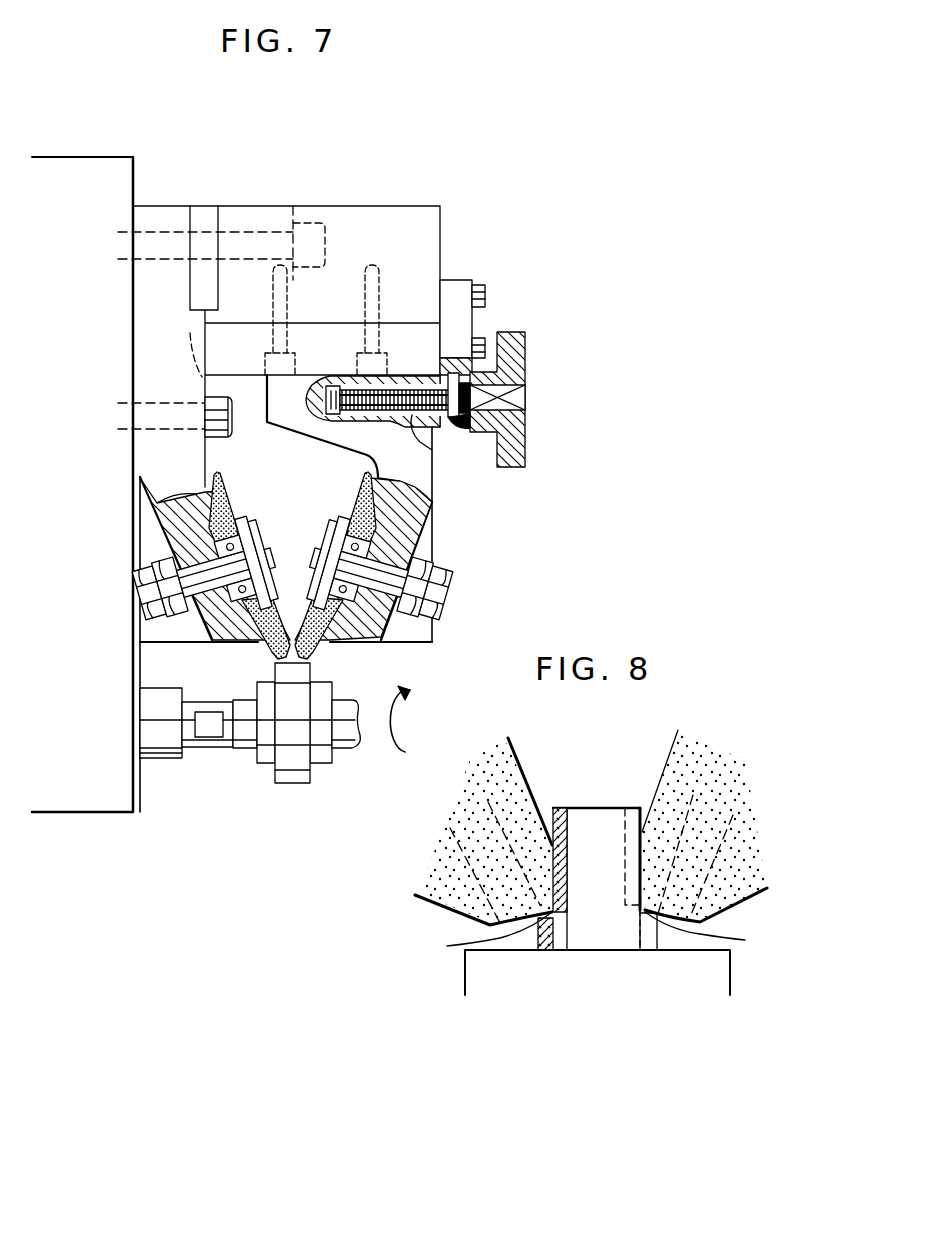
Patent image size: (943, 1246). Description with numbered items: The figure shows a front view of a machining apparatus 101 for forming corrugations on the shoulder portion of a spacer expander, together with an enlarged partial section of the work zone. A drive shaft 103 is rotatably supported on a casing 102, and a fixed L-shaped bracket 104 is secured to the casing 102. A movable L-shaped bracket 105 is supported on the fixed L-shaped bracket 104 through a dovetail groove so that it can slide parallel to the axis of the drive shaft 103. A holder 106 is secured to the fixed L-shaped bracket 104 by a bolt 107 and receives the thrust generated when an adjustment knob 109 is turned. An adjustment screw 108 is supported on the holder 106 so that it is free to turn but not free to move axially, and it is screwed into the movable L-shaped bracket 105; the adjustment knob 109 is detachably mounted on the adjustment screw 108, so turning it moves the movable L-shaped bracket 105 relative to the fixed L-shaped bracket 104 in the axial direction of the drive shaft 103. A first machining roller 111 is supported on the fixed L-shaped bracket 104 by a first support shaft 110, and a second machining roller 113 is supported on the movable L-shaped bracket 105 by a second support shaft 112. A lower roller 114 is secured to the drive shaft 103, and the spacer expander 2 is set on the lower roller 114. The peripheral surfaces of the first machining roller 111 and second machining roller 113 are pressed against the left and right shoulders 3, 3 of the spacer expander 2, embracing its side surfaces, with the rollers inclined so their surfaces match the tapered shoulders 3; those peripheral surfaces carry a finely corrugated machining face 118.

In FIG. 7, the machining apparatus 101 is at (66, 150).
In FIG. 7, the casing 102 is at (110, 172).
In FIG. 7, the drive shaft 103 is at (210, 758).
In FIG. 7, the fixed L-shaped bracket 104 is at (410, 222).
In FIG. 7, the movable L-shaped bracket 105 is at (432, 503).
In FIG. 7, the holder 106 is at (457, 323).
In FIG. 7, the bolt 107 is at (485, 293).
In FIG. 7, the adjustment screw 108 is at (433, 452).
In FIG. 7, the adjustment knob 109 is at (527, 446).
In FIG. 7, the first support shaft 110 is at (225, 640).
In FIG. 7, the first machining roller 111 is at (228, 500).
In FIG. 8, the first machining roller 111 is at (452, 866).
In FIG. 7, the second support shaft 112 is at (398, 567).
In FIG. 7, the second machining roller 113 is at (333, 630).
In FIG. 8, the second machining roller 113 is at (715, 868).
In FIG. 7, the lower roller 114 is at (292, 785).
In FIG. 8, the lower roller 114 is at (593, 992).
In FIG. 8, the finely corrugated machining face 118 is at (600, 940).
In FIG. 8, the spacer expander 2 is at (605, 921).
In FIG. 8, the shoulder 3 is at (545, 952).